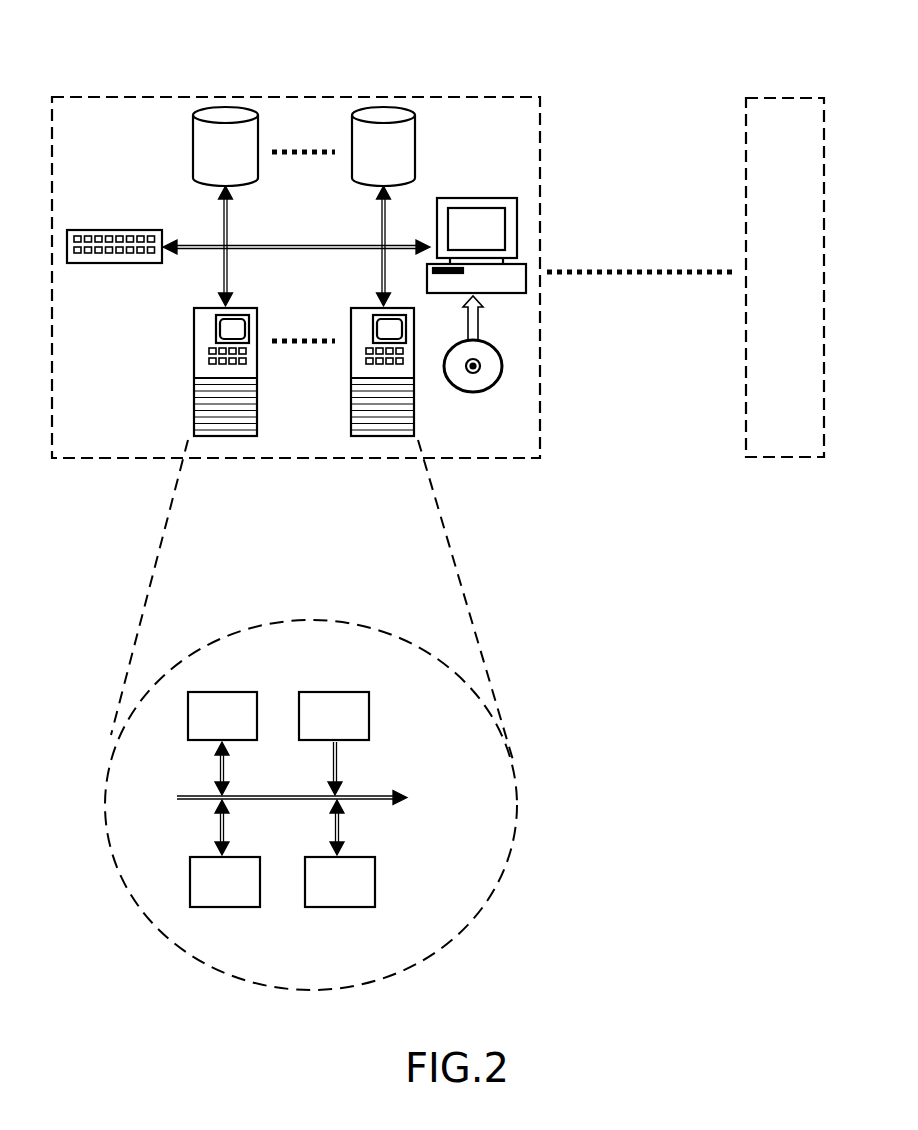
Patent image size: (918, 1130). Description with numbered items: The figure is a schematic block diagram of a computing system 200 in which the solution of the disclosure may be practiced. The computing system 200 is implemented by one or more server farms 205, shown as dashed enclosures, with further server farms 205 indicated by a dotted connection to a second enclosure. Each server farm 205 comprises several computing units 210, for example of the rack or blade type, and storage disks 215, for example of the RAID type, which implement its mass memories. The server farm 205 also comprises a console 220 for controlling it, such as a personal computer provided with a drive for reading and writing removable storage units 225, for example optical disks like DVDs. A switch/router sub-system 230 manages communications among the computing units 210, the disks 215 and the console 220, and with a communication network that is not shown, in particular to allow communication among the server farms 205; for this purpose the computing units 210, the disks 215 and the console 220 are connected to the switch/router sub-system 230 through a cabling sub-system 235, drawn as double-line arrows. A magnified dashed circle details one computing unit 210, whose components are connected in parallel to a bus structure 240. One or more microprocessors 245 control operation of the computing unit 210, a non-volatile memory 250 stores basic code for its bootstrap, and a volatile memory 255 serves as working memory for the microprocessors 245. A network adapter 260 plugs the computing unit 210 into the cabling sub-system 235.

The computing system 200 is at (680, 671).
The server farm 205 is at (438, 259).
The computing unit 210 is at (263, 376).
The storage disk 215 is at (264, 154).
The console 220 is at (477, 221).
The removable storage unit 225 is at (489, 367).
The switch/router sub-system 230 is at (119, 270).
The cabling sub-system 235 is at (296, 246).
The bus structure 240 is at (308, 804).
The microprocessor 245 is at (246, 728).
The non-volatile memory 250 is at (349, 728).
The volatile memory 255 is at (250, 876).
The network adapter 260 is at (363, 872).